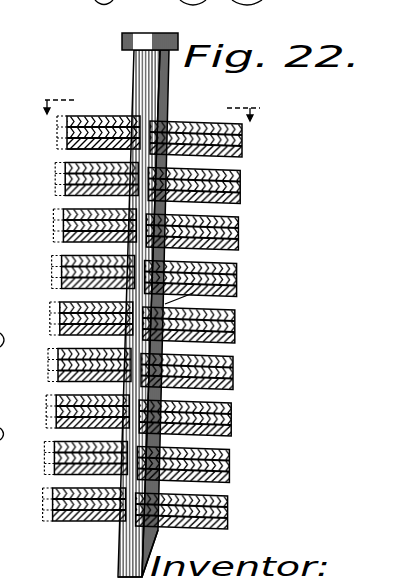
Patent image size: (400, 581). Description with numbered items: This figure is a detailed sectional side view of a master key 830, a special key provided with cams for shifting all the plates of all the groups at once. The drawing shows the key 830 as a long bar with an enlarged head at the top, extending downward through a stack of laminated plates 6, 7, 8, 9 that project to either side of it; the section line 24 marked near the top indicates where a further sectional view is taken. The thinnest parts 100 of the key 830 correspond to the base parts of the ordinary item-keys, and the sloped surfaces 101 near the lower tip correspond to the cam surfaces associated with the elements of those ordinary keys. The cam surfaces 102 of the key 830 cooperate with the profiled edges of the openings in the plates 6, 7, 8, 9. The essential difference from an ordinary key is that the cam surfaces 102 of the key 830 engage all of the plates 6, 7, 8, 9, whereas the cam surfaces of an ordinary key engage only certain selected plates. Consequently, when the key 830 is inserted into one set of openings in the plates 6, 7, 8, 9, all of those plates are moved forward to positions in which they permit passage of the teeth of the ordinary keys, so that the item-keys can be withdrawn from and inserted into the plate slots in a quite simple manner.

The plate 6 is at (67, 124).
The plate 7 is at (67, 134).
The plate 8 is at (67, 144).
The plate 9 is at (77, 151).
The section line 24- 24 is at (150, 99).
The thinnest parts 100 is at (132, 564).
The sloped surfaces 101 is at (146, 548).
The cam surfaces 102 is at (232, 268).
The key 830 is at (145, 72).